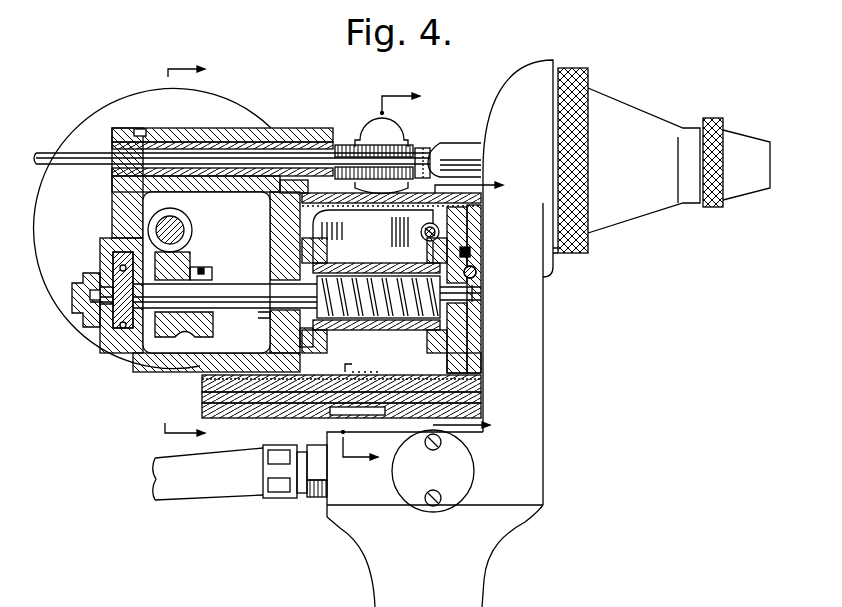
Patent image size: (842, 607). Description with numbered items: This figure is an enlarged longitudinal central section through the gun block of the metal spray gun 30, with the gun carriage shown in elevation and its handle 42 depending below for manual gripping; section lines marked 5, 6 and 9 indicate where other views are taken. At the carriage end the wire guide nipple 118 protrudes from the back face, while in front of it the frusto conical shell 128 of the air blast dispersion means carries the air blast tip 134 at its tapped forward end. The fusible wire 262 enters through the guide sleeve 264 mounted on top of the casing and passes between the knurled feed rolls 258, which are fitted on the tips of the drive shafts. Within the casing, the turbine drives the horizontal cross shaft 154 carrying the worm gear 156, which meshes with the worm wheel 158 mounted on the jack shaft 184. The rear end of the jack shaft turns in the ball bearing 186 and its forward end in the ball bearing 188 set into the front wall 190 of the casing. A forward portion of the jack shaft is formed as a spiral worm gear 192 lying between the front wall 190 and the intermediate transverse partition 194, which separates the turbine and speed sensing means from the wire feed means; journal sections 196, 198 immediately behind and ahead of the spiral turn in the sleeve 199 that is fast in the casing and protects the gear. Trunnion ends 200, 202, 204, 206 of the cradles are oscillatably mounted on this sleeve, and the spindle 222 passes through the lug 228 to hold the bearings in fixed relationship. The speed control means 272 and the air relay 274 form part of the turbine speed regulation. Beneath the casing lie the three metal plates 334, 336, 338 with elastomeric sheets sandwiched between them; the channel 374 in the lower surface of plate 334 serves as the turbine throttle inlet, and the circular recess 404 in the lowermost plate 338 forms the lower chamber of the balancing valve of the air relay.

The metal spray gun 30 is at (551, 355).
The handle 42 is at (463, 602).
The frusto conical shell 128 is at (645, 118).
The air blast tip 134 is at (746, 138).
The guide sleeve 264 is at (305, 140).
The wire 262 is at (56, 155).
The knurled feed rolls 258 is at (412, 143).
The wire guide nipple 118 is at (450, 150).
The intermediate transverse partition 194 is at (278, 226).
The lug 228 is at (270, 200).
The horizontal cross shaft 154 is at (185, 224).
The worm gear 156 is at (188, 236).
The jack shaft 184 is at (247, 285).
The worm wheel 158 is at (186, 331).
The journal section 196 is at (268, 319).
The ball bearing 186 is at (115, 262).
The spindle 222 is at (478, 211).
The front wall 190 is at (487, 213).
The trunnion end 206 is at (485, 239).
The ball bearing 188 is at (474, 270).
The journal section 198 is at (484, 294).
The trunnion end 204 is at (320, 248).
The sleeve 199 is at (390, 262).
The worm gear 192 is at (377, 330).
The trunnion end 200 is at (327, 345).
The trunnion end 202 is at (427, 345).
The speed control means 272 is at (287, 353).
The channel 374 is at (387, 381).
The metal plate 334 is at (202, 385).
The metal plate 336 is at (202, 398).
The metal plate 338 is at (202, 413).
The circular recess 404 is at (225, 462).
The air relay 274 is at (312, 447).
The section line 9 is at (194, 252).
The section line 5 is at (391, 274).
The section line 6 is at (476, 303).